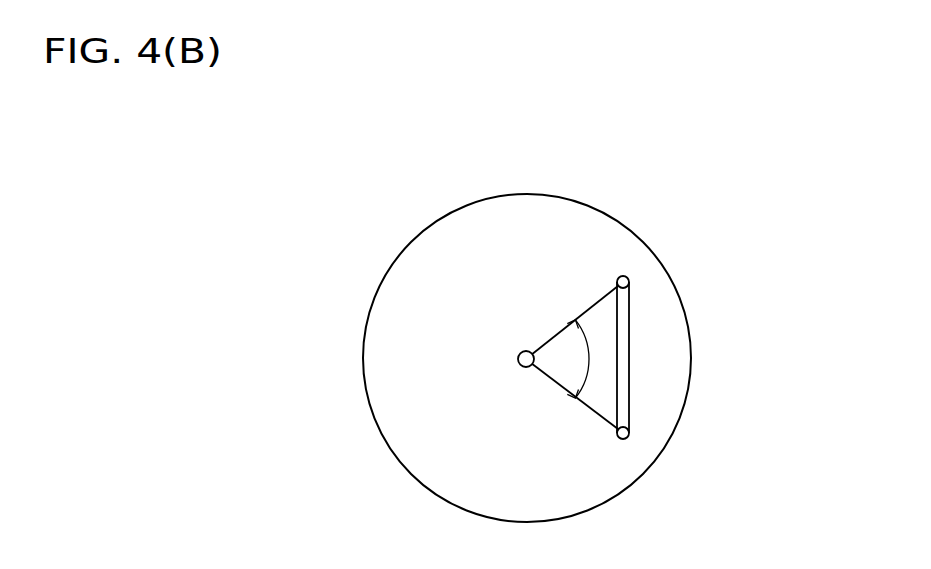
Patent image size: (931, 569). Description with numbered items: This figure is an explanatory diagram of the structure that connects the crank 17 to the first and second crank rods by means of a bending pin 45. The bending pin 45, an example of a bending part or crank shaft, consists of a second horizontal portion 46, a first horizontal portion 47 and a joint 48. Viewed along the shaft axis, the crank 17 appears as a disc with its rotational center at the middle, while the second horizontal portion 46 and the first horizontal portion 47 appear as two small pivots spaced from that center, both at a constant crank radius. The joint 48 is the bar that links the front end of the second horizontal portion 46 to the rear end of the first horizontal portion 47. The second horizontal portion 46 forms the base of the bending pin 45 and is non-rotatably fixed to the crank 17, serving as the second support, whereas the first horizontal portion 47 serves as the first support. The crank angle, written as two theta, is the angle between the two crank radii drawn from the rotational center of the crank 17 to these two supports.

The crank 17 is at (468, 273).
The bending pin 45 is at (639, 342).
The second horizontal portion 46 is at (627, 279).
The first horizontal portion 47 is at (628, 437).
The joint 48 is at (628, 372).